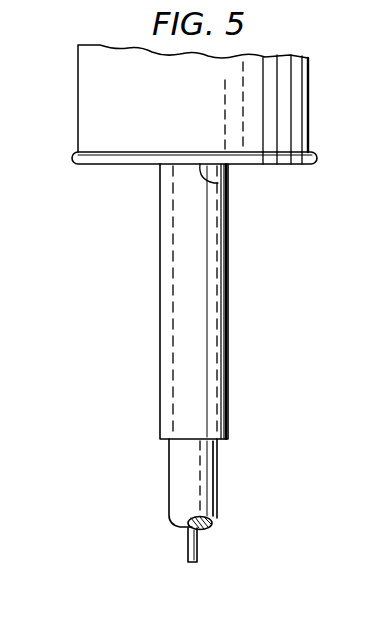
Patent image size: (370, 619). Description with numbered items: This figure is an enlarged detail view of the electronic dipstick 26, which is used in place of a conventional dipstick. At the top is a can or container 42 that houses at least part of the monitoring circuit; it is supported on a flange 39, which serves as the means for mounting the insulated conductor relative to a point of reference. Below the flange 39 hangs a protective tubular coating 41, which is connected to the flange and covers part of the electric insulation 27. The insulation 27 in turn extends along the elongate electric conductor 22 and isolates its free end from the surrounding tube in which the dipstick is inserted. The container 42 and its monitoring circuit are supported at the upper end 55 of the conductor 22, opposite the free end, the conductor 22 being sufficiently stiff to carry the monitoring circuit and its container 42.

The can or container 42 is at (78, 103).
The flange 39 is at (140, 164).
The protective tubular coating 41 is at (160, 318).
The upper end 55 is at (197, 165).
The electric insulation 27 is at (169, 480).
The electronic dipstick 26 is at (222, 481).
The conductor 22 is at (186, 547).